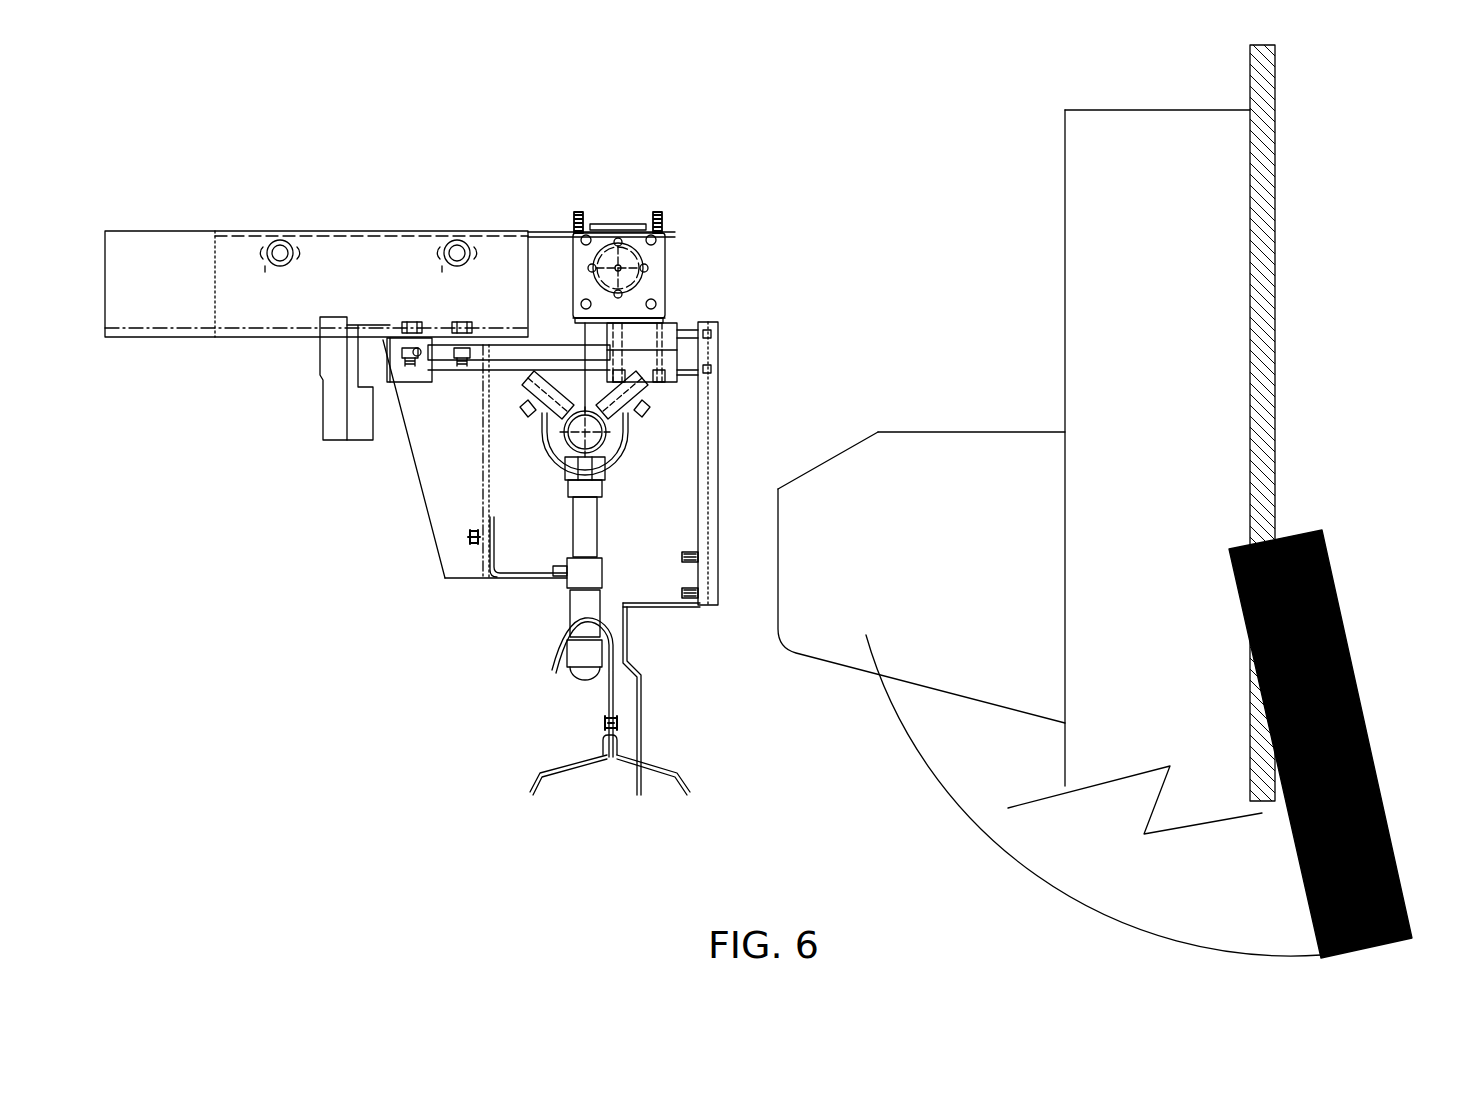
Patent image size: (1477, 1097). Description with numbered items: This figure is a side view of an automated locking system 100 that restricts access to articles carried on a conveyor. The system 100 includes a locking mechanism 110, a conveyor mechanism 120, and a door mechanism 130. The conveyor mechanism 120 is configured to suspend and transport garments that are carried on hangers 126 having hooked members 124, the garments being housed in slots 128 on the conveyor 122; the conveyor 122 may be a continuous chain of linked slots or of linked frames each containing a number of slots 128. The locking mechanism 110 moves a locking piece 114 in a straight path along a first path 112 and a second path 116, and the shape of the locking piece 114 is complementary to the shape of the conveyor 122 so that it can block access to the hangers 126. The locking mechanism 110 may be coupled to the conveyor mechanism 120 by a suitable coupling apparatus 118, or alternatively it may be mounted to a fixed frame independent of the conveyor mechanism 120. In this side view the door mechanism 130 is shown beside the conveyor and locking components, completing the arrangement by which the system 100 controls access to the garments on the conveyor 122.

The system 100 is at (539, 152).
The locking mechanism 110 is at (330, 418).
The first path 112 is at (632, 258).
The locking piece 114 is at (627, 663).
The second path 116 is at (509, 362).
The coupling apparatus 118 is at (656, 221).
The conveyor mechanism 120 is at (226, 231).
The conveyor 122 is at (618, 453).
The hooked member 124 is at (614, 722).
The hanger 126 is at (530, 792).
The slot 128 is at (583, 677).
The door mechanism 130 is at (1317, 530).